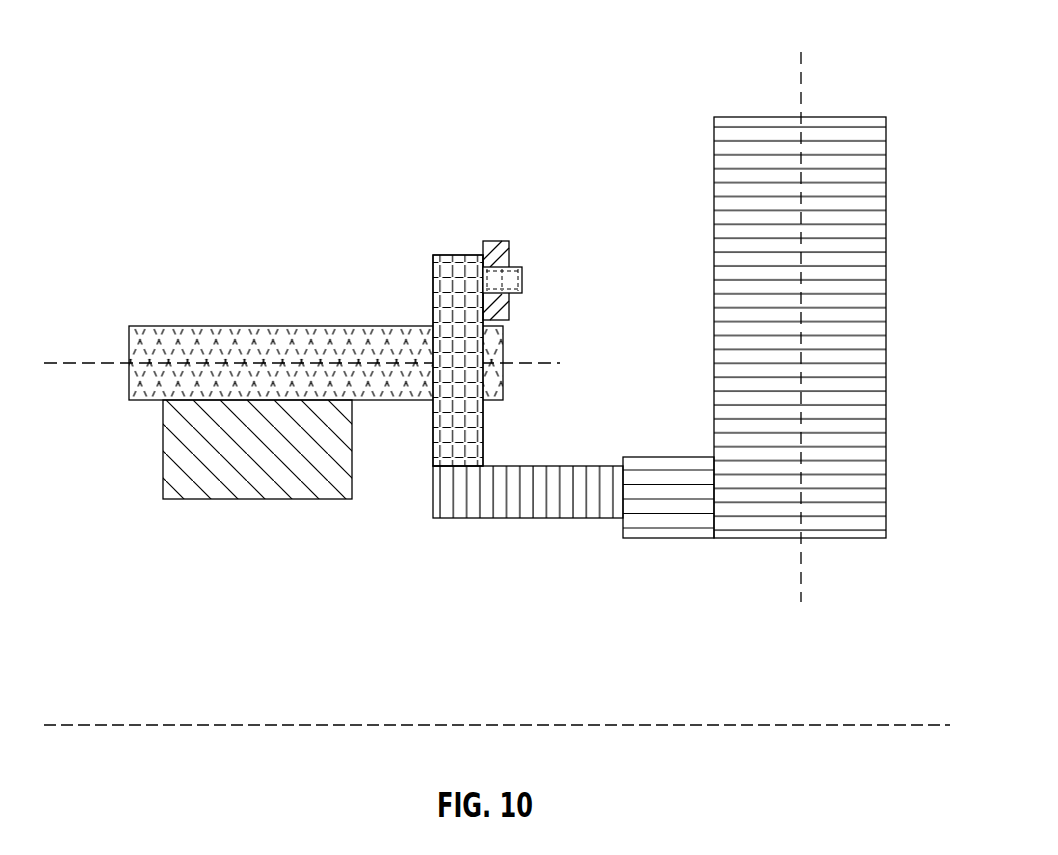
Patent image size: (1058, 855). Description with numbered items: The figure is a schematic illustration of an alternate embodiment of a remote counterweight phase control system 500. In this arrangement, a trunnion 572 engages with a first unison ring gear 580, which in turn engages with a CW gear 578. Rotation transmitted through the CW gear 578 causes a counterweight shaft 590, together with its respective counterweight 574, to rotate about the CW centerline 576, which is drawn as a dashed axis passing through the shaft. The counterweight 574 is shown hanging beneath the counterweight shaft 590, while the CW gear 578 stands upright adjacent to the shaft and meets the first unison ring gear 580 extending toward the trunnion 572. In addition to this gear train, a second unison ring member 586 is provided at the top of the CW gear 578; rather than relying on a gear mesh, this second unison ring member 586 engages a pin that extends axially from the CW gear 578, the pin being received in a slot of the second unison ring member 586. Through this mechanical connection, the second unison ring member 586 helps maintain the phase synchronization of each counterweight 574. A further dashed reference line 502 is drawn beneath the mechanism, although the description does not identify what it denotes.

The remote counterweight phase control system 500 is at (166, 47).
The ground plane / datum line 502 is at (870, 725).
The trunnion 572 is at (875, 452).
The counterweight 574 is at (237, 483).
The CW centerline 576 is at (110, 361).
The CW gear 578 is at (445, 292).
The first unison ring gear 580 is at (475, 510).
The second unison ring member 586 is at (507, 257).
The counterweight shaft 590 is at (277, 338).